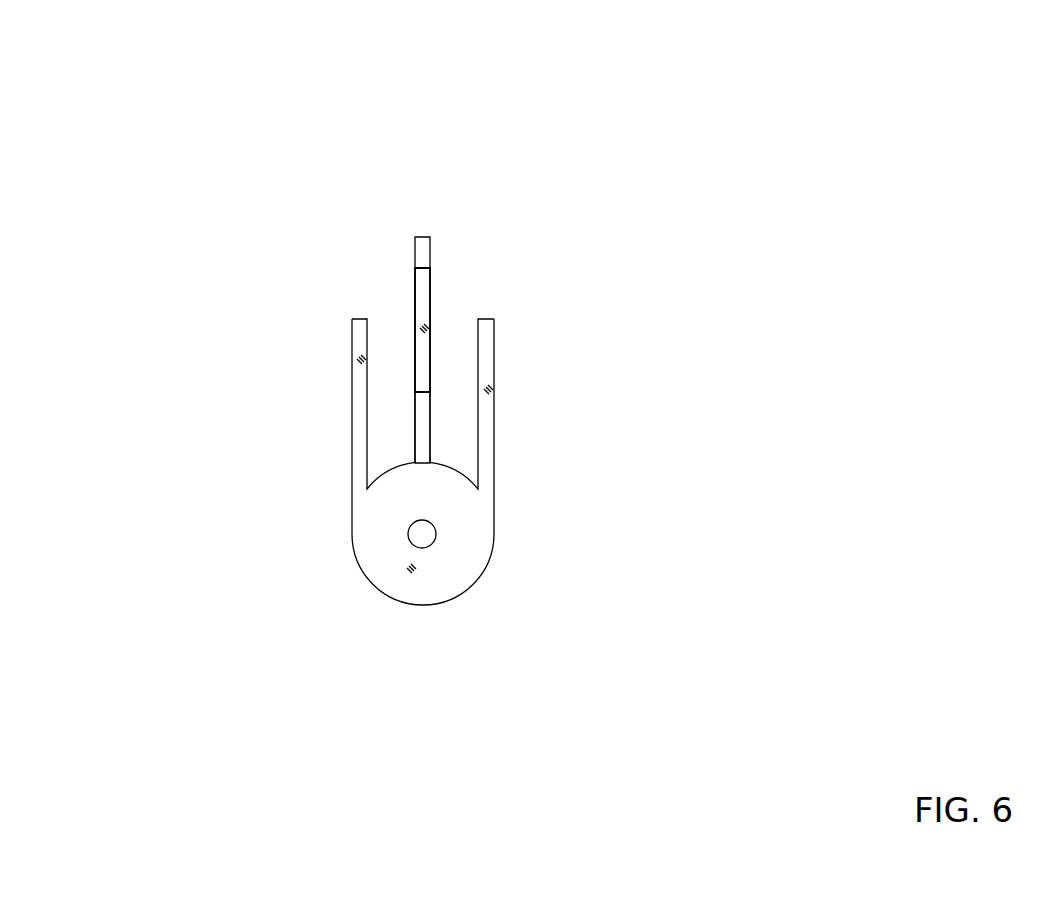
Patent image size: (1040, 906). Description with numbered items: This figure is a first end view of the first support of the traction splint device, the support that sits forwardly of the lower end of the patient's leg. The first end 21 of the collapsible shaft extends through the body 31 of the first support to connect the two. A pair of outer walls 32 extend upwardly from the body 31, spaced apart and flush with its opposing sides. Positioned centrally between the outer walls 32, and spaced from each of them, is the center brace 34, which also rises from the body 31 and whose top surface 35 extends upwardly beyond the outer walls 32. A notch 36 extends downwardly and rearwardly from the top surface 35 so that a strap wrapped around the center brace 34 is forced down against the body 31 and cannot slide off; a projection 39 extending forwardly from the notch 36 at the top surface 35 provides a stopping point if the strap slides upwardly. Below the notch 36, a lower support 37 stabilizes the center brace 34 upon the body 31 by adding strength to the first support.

The first end 21 is at (418, 543).
The body 31 is at (350, 545).
The outer walls 32 is at (352, 335).
The center brace 34 is at (431, 302).
The top surface 35 is at (422, 237).
The notch 36 is at (420, 367).
The lower support 37 is at (427, 415).
The projection 39 is at (423, 268).